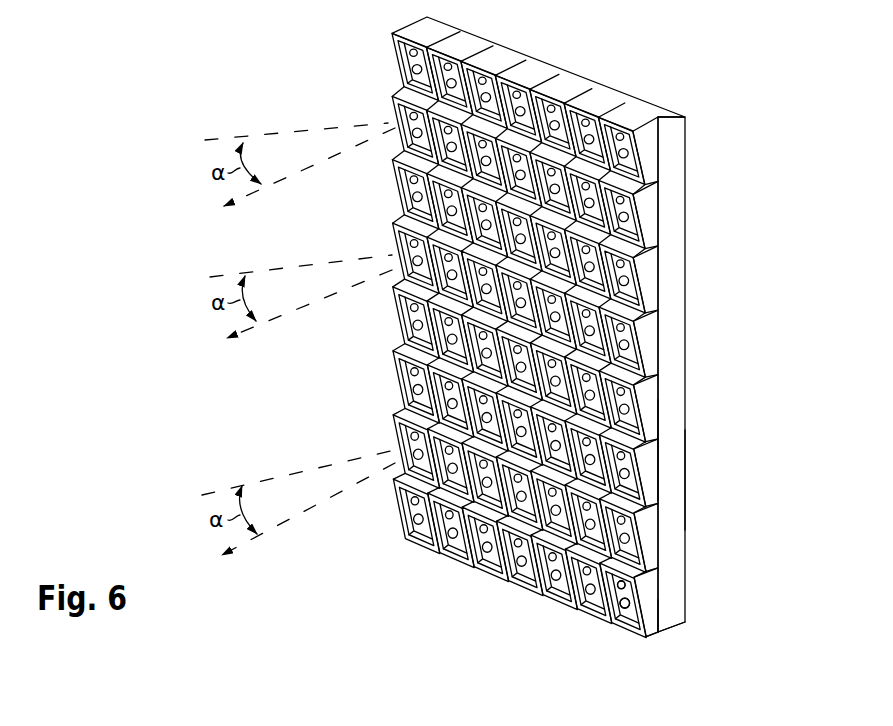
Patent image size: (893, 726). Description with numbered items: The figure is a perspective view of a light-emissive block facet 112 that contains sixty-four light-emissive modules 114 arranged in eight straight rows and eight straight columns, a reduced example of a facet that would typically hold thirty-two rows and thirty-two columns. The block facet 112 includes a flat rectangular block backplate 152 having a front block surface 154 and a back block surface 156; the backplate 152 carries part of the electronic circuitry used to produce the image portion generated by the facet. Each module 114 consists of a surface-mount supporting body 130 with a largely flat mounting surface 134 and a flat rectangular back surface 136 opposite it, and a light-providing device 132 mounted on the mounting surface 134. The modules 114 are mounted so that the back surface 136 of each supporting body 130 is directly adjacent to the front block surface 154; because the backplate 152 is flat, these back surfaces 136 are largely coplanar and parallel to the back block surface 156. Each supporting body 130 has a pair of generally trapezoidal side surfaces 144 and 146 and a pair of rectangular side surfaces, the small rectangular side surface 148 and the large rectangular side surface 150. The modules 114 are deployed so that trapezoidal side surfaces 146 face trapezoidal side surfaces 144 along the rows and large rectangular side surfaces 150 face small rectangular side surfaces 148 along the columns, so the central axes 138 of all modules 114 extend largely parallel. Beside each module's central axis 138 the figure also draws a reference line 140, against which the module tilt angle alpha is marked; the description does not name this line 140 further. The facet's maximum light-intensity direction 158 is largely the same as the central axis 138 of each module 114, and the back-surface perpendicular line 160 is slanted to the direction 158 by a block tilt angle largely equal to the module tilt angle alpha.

The light-emissive block facet 112 is at (186, 407).
The light-emissive module 114 is at (643, 327).
The supporting body 130 is at (640, 602).
The light-providing device 132 is at (631, 586).
The mounting surface 134 is at (619, 630).
The back surface 136 is at (663, 615).
The central axis 138 is at (317, 165).
The first light direction 140 is at (310, 132).
The trapezoidal side surface 144 is at (390, 58).
The trapezoidal side surface 146 is at (642, 147).
The small rectangular side surface 148 is at (649, 641).
The large rectangular side surface 150 is at (626, 114).
The block backplate 152 is at (670, 338).
The front block surface 154 is at (663, 452).
The back block surface 156 is at (690, 480).
The maximum light-intensity direction 158 is at (323, 500).
The back-surface perpendicular line 160 is at (308, 470).